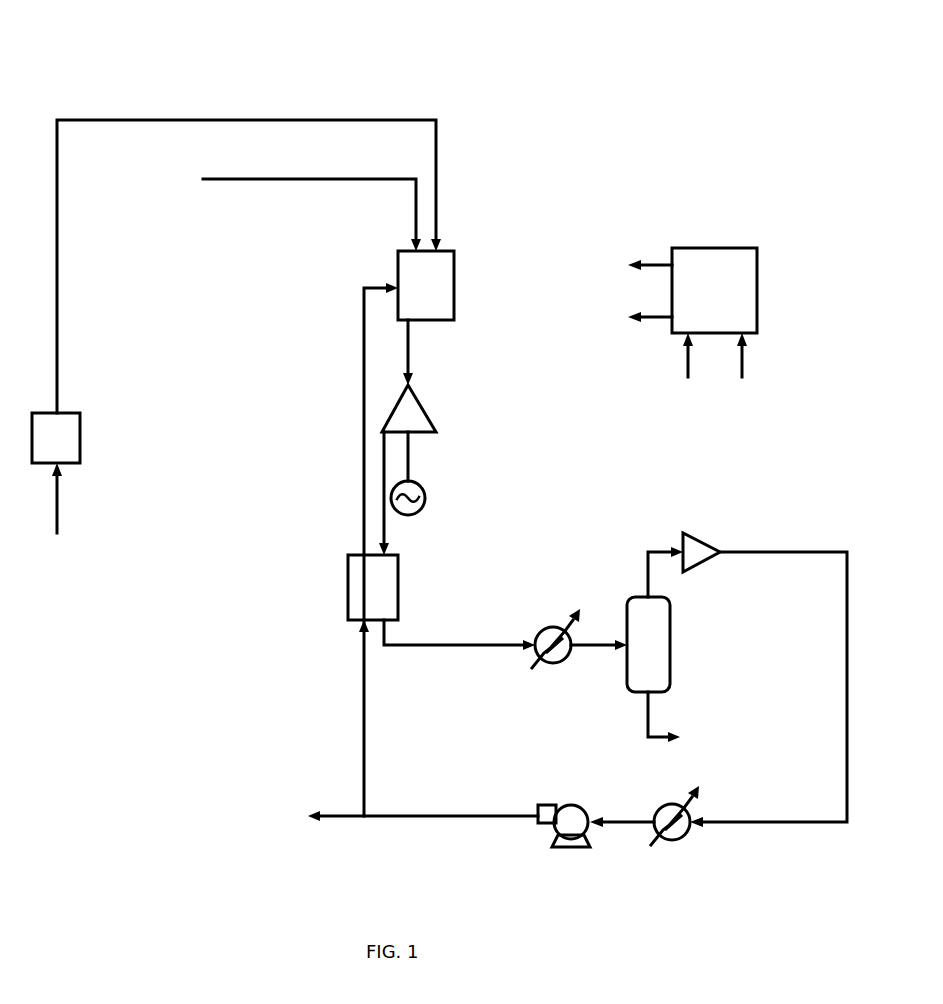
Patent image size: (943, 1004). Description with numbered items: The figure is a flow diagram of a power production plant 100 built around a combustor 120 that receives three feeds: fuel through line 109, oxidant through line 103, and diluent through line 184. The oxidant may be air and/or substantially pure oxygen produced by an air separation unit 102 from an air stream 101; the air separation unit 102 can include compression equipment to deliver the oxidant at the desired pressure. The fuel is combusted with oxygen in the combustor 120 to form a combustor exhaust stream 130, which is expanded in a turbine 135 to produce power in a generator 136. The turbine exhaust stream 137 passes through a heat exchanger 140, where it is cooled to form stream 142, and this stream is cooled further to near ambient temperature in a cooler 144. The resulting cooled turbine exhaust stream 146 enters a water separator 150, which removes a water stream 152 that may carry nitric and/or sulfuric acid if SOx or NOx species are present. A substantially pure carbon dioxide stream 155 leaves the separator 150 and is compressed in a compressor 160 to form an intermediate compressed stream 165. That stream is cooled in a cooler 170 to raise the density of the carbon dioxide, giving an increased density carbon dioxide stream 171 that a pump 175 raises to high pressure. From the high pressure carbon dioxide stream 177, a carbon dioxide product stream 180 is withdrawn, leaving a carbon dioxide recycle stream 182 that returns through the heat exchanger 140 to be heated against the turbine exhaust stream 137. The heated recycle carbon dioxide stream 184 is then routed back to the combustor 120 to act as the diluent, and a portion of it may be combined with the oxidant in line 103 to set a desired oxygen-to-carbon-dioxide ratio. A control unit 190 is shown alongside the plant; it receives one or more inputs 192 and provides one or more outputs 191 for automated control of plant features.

The power production plant 100 is at (88, 38).
The air stream 101 is at (57, 508).
The air separation unit 102 is at (80, 433).
The oxidant line 103 is at (57, 256).
The fuel line 109 is at (346, 180).
The combustor 120 is at (455, 290).
The combustor exhaust stream 130 is at (408, 340).
The turbine 135 is at (424, 398).
The generator 136 is at (425, 500).
The turbine exhaust stream 137 is at (384, 522).
The heat exchanger 140 is at (398, 570).
The cooled stream 142 is at (463, 643).
The cooler 144 is at (556, 664).
The cooled turbine exhaust stream 146 is at (604, 646).
The water separator 150 is at (670, 628).
The water stream 152 is at (648, 712).
The substantially pure carbon dioxide stream 155 is at (648, 572).
The compressor 160 is at (700, 540).
The intermediate compressed stream 165 is at (778, 552).
The cooler 170 is at (670, 840).
The increased density carbon dioxide stream 171 is at (613, 818).
The pump 175 is at (568, 805).
The high pressure carbon dioxide stream 177 is at (416, 814).
The carbon dioxide product stream 180 is at (345, 820).
The carbon dioxide recycle stream 182 is at (364, 698).
The heated recycle carbon dioxide stream 184 is at (363, 503).
The control unit 190 is at (757, 268).
The outputs 191 is at (647, 291).
The inputs 192 is at (715, 355).